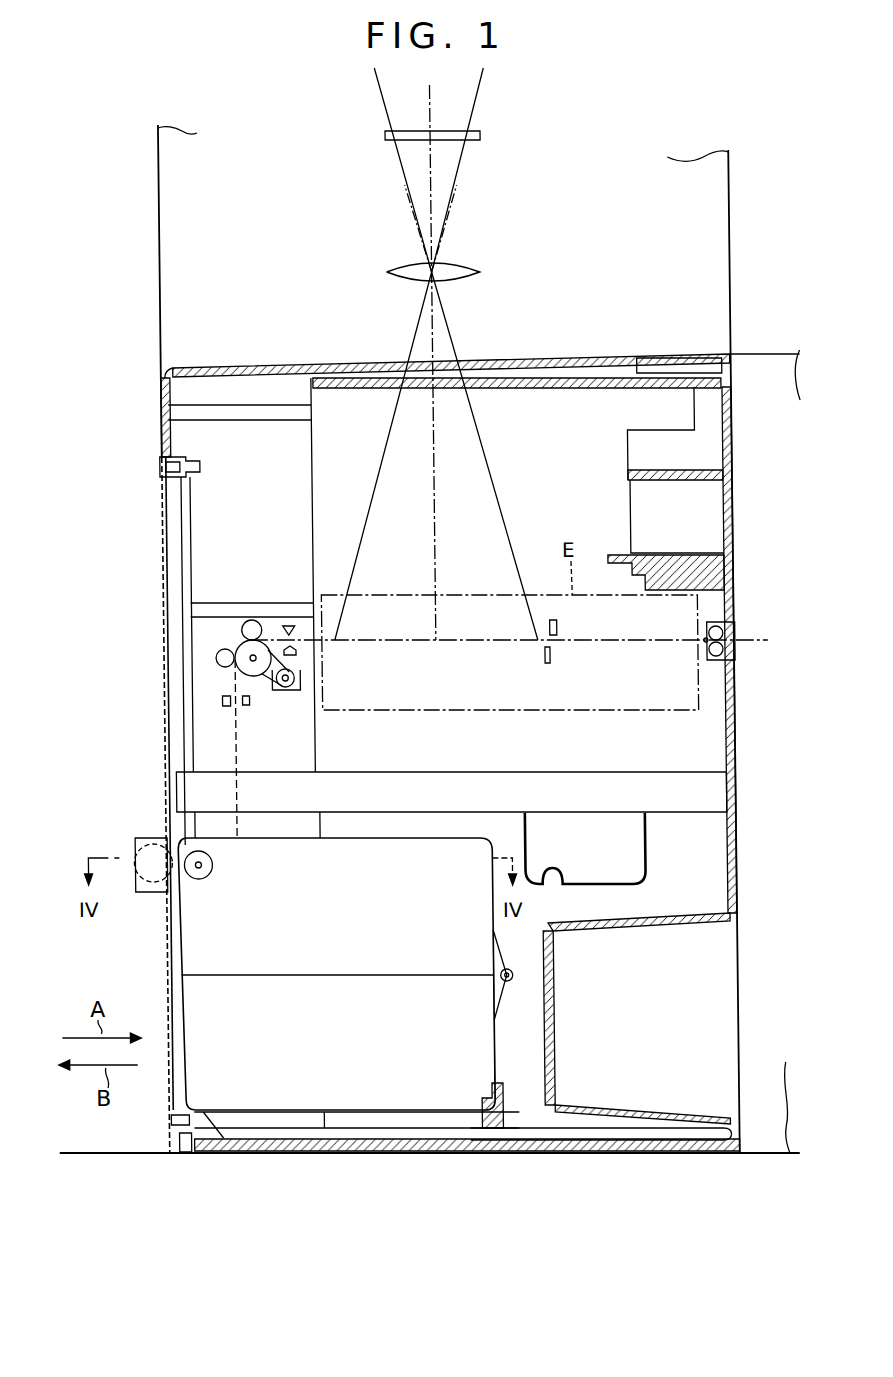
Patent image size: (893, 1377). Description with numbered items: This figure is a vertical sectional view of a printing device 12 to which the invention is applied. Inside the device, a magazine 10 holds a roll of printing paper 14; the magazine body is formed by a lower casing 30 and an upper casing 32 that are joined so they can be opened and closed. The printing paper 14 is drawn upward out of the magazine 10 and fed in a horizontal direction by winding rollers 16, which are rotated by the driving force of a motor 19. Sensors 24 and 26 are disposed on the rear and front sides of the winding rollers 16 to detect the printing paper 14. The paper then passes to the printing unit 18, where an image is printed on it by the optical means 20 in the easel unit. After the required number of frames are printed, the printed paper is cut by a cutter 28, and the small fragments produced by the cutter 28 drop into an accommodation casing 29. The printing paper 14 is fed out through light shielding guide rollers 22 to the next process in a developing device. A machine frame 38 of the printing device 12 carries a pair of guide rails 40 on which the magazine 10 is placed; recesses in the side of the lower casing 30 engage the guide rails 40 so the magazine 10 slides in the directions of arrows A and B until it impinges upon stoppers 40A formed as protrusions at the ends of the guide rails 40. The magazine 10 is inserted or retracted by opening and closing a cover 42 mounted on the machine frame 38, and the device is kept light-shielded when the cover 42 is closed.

The magazine 10 is at (214, 939).
The printing device 12 is at (130, 451).
The printing paper 14 is at (236, 752).
The winding rollers 16 is at (241, 650).
The printing unit 18 is at (461, 582).
The motor 19 is at (291, 690).
The optical means 20 is at (491, 270).
The light shielding guide rollers 22 is at (714, 638).
The sensor 24 is at (218, 706).
The sensor 26 is at (284, 624).
The cutter 28 is at (552, 628).
The accommodation casing 29 is at (642, 856).
The lower casing 30 is at (470, 1050).
The upper casing 32 is at (424, 848).
The machine frame 38 is at (587, 1152).
The guide rails 40 is at (343, 1130).
The stoppers 40A is at (490, 1096).
The opening/closing cover 42 is at (158, 995).